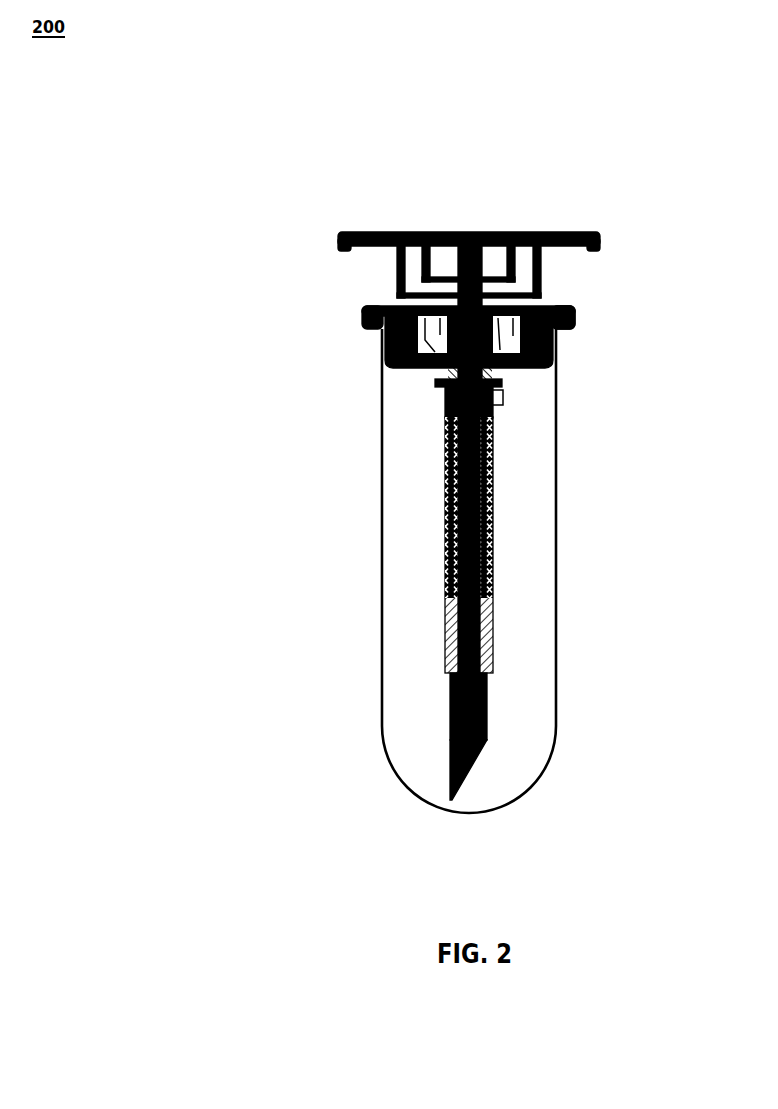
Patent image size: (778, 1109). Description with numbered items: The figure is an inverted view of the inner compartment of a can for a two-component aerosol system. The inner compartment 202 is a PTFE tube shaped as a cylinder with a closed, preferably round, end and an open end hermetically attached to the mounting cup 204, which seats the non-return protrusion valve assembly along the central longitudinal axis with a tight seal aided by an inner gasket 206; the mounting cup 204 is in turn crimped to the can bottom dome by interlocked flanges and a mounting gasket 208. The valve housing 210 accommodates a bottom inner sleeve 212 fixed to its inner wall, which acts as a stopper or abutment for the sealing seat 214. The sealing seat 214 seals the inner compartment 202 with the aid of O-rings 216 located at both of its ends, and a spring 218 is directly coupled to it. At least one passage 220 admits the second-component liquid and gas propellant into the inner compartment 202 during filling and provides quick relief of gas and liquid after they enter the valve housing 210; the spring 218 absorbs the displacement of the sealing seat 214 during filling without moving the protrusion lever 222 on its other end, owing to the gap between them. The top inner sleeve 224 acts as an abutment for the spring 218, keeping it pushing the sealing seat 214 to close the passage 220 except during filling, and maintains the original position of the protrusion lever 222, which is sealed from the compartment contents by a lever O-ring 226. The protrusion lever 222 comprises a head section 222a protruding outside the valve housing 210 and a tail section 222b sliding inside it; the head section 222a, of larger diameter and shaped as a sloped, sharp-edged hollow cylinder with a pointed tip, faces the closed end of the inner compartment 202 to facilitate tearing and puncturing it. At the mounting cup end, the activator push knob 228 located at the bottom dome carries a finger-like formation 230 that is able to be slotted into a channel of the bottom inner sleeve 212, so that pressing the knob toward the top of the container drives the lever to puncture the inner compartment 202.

The inner compartment 202 is at (527, 773).
The mounting cup 204 is at (385, 352).
The inner gasket 206 is at (396, 301).
The mounting gasket 208 is at (363, 318).
The valve housing 210 is at (493, 578).
The bottom inner sleeve 212 is at (573, 316).
The sealing seat 214 is at (445, 402).
The O-rings 216 is at (503, 398).
The spring 218 is at (445, 512).
The passage 220 is at (436, 383).
The protrusion lever 222 is at (334, 718).
The head section 222a is at (452, 748).
The tail section 222b is at (447, 618).
The top inner sleeve 224 is at (494, 630).
The lever O-ring 226 is at (493, 662).
The top plate 228 is at (543, 233).
The seal 230 is at (535, 305).